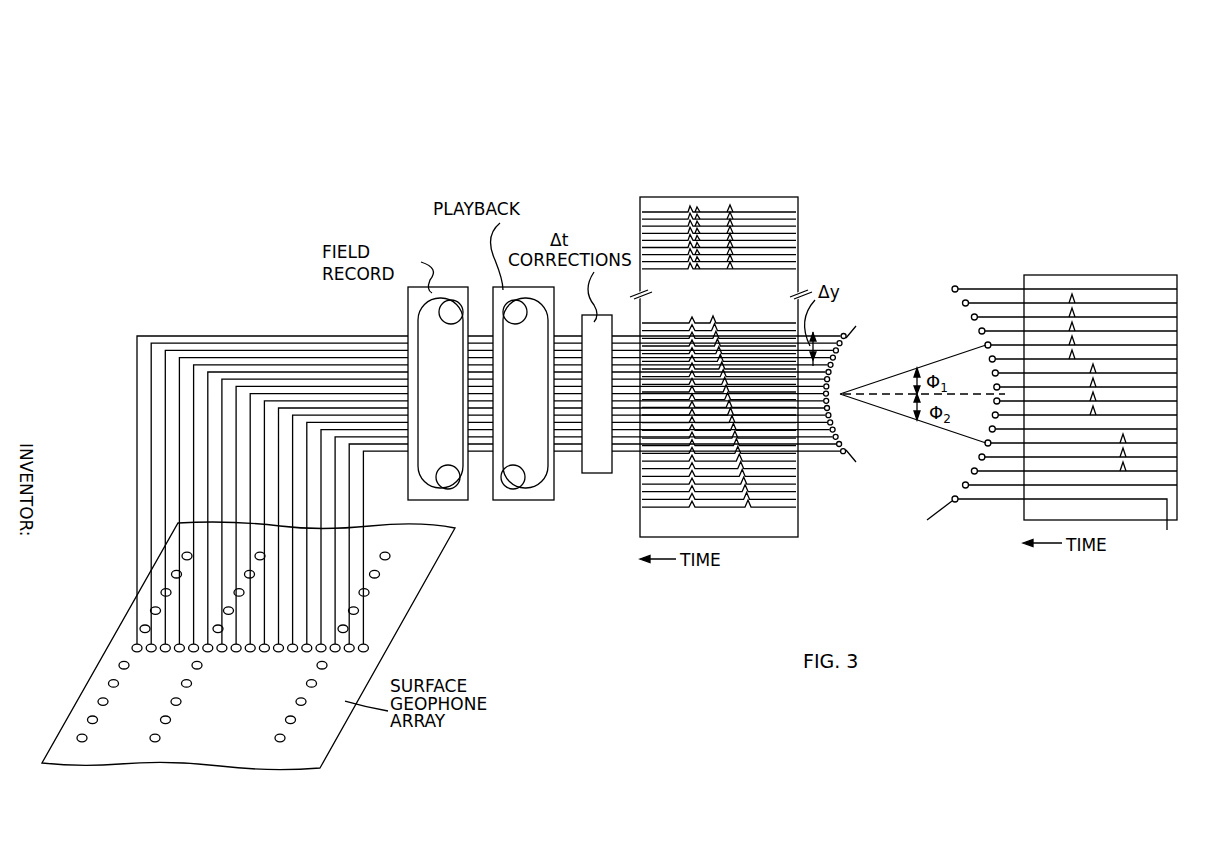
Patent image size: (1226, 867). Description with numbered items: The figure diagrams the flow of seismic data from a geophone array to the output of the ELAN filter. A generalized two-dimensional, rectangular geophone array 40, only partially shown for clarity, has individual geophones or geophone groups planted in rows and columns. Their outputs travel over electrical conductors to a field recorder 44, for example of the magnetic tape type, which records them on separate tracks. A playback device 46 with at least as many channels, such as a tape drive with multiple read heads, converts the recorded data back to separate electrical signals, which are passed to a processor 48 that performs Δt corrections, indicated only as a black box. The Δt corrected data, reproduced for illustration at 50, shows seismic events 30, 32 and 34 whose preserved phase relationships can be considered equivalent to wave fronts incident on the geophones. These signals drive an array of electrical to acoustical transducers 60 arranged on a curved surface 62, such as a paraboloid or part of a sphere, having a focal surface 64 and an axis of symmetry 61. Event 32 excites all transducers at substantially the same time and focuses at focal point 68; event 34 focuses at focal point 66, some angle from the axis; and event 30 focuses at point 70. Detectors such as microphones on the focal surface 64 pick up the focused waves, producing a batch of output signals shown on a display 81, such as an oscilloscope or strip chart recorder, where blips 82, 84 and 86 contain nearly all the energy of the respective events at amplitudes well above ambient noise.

The seismic event 30 is at (730, 210).
The seismic event 32 is at (695, 210).
The seismic event 34 is at (688, 210).
The geophone array 40 is at (334, 750).
The field recorder 44 is at (460, 500).
The playback device 46 is at (531, 500).
The processor 48 is at (600, 475).
The Δt corrected data 50 is at (775, 537).
The electrical to acoustical transducers 60 is at (838, 334).
The axis of symmetry 61 is at (898, 406).
The curved surface 62 is at (846, 337).
The focal surface 64 is at (930, 523).
The focal point 66 is at (984, 345).
The focal point 68 is at (993, 386).
The focal point 70 is at (979, 456).
The display 81 is at (1143, 524).
The blip 82 is at (1080, 318).
The blip 84 is at (1123, 458).
The blip 86 is at (1097, 398).